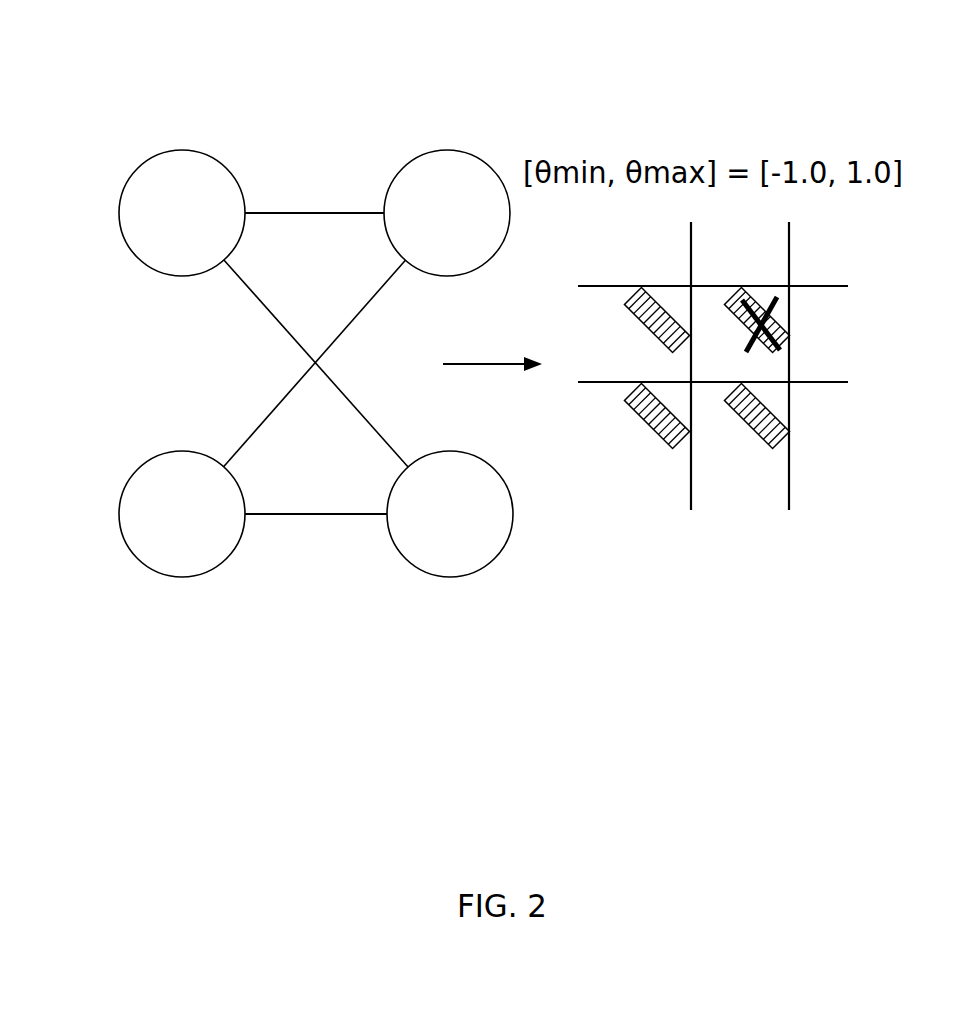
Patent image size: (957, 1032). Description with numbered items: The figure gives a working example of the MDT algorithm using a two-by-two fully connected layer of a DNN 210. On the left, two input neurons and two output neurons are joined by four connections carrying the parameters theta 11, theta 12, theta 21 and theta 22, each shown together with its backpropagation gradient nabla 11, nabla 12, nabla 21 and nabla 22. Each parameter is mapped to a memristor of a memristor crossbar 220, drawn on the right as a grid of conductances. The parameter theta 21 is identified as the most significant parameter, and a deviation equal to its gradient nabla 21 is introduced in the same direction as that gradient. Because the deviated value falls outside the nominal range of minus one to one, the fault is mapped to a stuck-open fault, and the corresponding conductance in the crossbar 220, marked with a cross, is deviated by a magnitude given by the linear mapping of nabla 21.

The DNN 210 is at (157, 94).
The memristor crossbar 220 is at (843, 582).
The connection weight θ11 and gradient ∇11 between i1 and o1 11 is at (314, 175).
The connection weight θ12 and gradient ∇12 between i1 and o2 12 is at (316, 351).
The connection weight θ21 and gradient ∇21 between o1 and i2 21 is at (315, 363).
The connection weight θ22 and gradient ∇22 between i2 and o2 22 is at (316, 488).